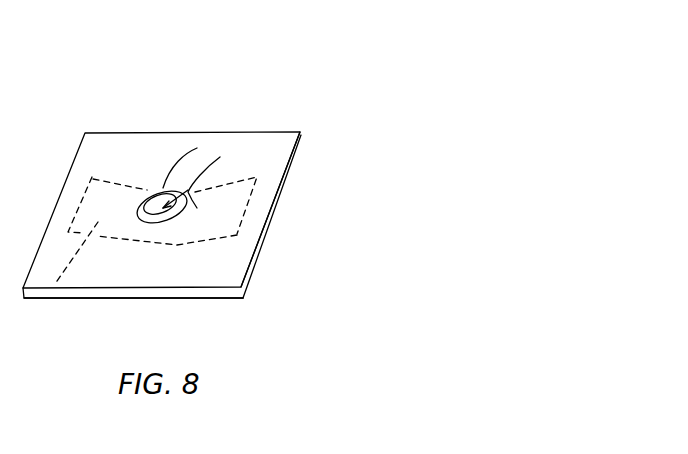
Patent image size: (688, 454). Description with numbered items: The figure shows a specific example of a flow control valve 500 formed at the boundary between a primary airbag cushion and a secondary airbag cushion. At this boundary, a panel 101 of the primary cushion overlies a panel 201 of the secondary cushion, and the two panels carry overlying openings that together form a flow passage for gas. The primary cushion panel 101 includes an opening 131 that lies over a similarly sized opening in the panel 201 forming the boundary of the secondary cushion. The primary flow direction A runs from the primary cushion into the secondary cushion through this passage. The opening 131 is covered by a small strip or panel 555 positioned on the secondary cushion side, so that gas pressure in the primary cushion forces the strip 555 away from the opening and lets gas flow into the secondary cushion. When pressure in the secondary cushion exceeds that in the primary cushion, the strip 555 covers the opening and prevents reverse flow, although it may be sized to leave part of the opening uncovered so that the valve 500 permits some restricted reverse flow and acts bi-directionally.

The flow control valve 500 is at (205, 88).
The panel of the primary cushion 101 is at (232, 284).
The panel of the secondary cushion 201 is at (188, 299).
The opening 131 is at (197, 208).
The covering strip or panel 555 is at (33, 306).
The primary flow direction A is at (201, 171).